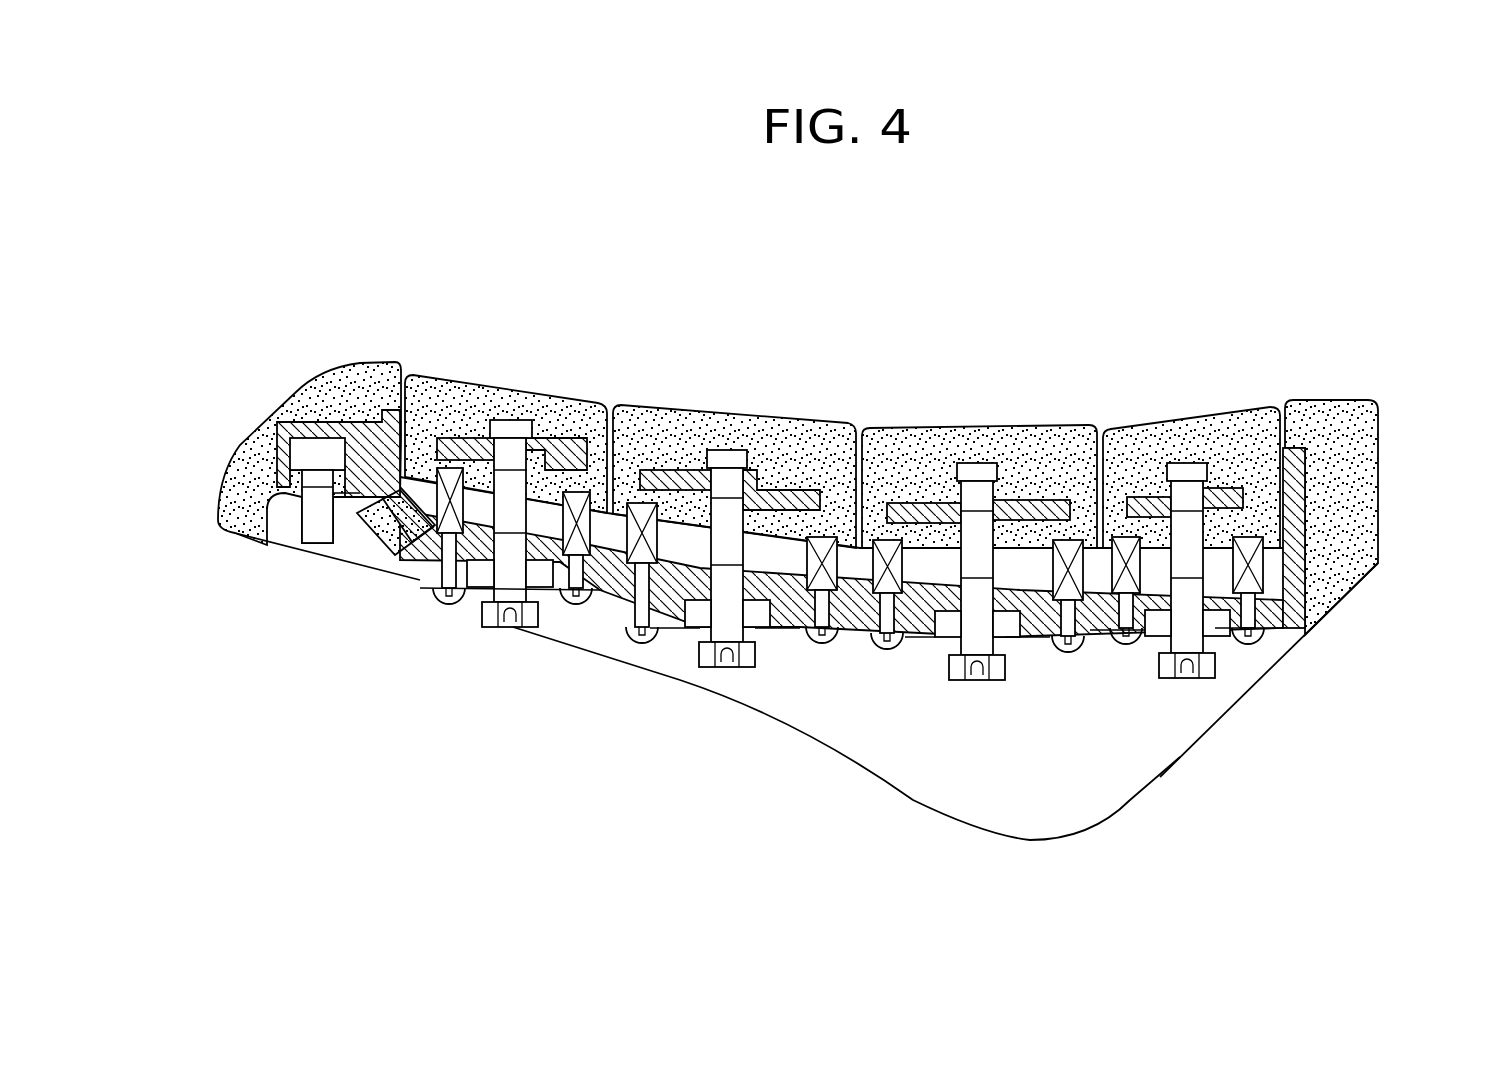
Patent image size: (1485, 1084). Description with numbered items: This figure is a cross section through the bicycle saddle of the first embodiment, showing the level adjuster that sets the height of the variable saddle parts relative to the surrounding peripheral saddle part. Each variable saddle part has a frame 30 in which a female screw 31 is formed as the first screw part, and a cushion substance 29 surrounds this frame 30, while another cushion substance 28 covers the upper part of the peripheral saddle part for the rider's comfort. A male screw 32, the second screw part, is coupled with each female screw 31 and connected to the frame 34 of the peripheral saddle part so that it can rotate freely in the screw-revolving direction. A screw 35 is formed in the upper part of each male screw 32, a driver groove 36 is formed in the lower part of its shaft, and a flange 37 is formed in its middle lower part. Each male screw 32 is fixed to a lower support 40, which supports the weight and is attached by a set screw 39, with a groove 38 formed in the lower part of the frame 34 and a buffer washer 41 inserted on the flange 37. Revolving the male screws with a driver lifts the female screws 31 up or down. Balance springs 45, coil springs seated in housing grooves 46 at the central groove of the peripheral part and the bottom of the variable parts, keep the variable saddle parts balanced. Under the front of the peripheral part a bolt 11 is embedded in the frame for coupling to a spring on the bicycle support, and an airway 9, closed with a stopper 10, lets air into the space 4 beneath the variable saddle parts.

The space 4 is at (693, 553).
The airway 9 is at (380, 577).
The stopper 10 is at (393, 522).
The bolt 11 is at (325, 455).
The cushion substance 28 is at (334, 385).
The cushion substance 29 is at (700, 418).
The frame 30 is at (440, 445).
The female screw 31 is at (703, 482).
The male screw 32 is at (680, 680).
The frame 34 is at (398, 528).
The screw 35 is at (788, 650).
The driver groove 36 is at (727, 630).
The flange 37 is at (762, 645).
The groove 38 is at (700, 630).
The set screw 39 is at (656, 642).
The lower support 40 is at (977, 640).
The buffer washer 41 is at (950, 640).
The balance spring 45 is at (443, 530).
The housing groove 46 is at (603, 447).